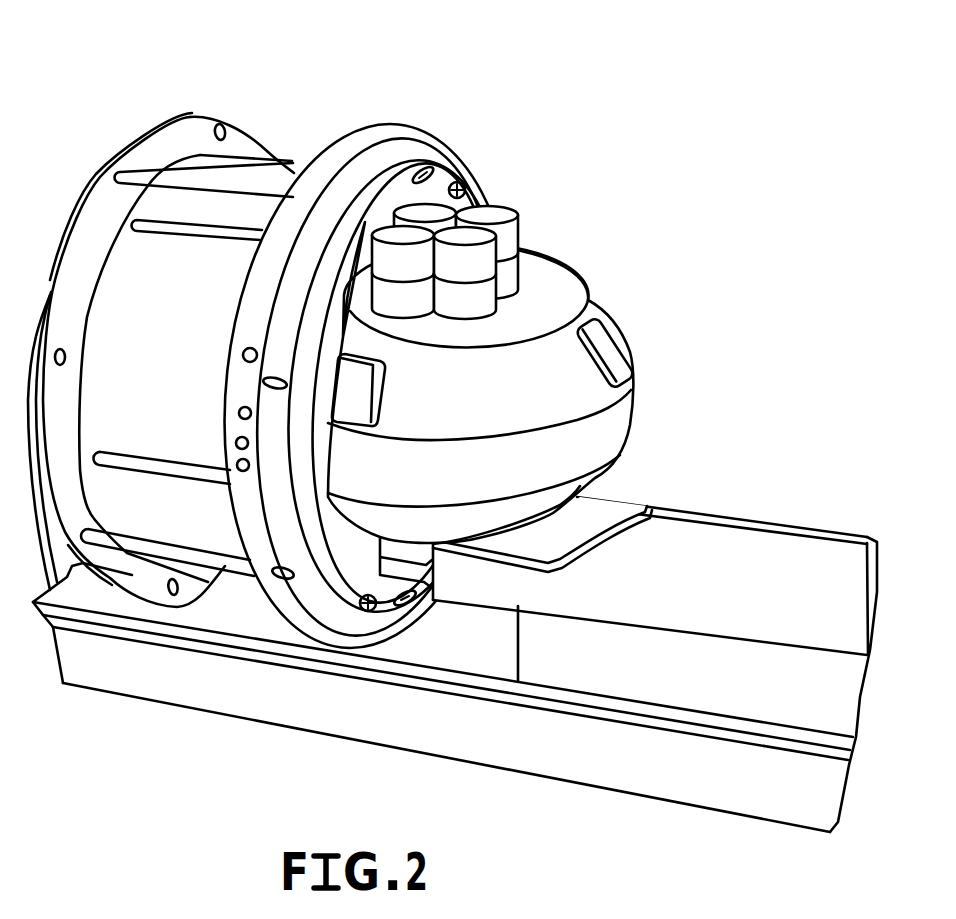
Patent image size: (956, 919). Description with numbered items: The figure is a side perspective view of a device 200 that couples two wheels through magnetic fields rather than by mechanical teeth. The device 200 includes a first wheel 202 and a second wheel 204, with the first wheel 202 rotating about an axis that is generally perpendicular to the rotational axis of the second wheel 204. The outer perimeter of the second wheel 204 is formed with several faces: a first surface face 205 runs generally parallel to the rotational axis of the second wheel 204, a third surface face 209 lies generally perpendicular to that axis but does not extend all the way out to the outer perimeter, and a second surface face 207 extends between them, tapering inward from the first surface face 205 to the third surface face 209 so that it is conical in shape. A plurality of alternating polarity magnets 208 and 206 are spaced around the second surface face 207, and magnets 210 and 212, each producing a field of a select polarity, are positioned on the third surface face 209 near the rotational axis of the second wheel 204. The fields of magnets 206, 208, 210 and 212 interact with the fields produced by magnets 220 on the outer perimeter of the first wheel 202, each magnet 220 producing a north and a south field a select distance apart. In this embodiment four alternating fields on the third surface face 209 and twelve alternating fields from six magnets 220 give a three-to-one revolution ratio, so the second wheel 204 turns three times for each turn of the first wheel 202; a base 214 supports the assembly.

The device 200 is at (512, 72).
The first wheel 202 is at (360, 166).
The second wheel 204 is at (608, 318).
The first surface face 205 is at (617, 433).
The magnet 206 is at (612, 392).
The second surface face 207 is at (527, 410).
The magnet 208 is at (387, 397).
The third surface face 209 is at (540, 275).
The magnet 210 is at (507, 212).
The magnet 212 is at (412, 206).
The base 214 is at (703, 567).
The magnet 220 is at (362, 606).